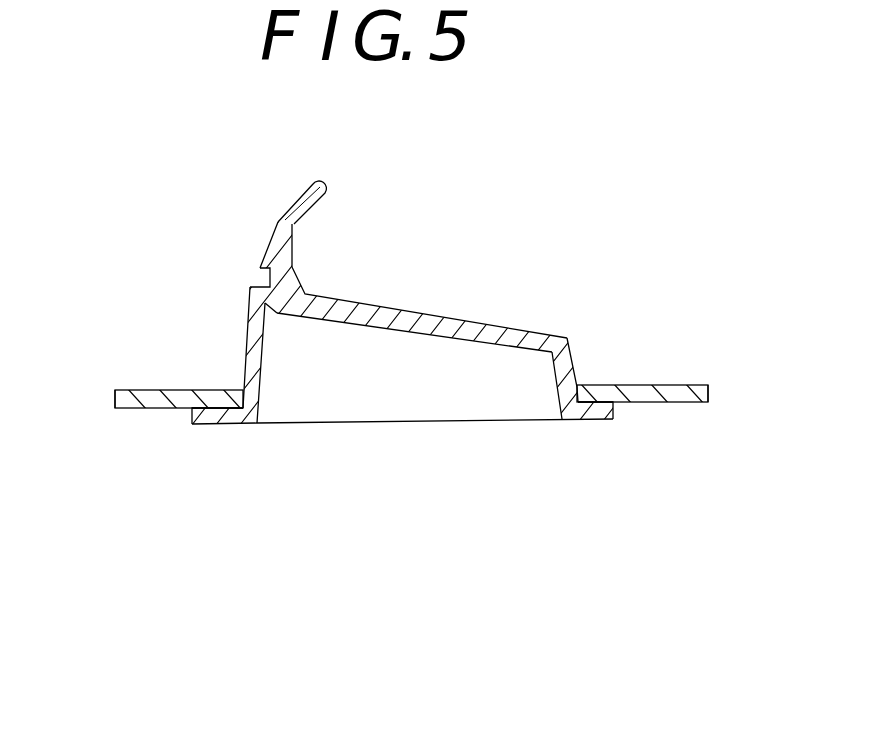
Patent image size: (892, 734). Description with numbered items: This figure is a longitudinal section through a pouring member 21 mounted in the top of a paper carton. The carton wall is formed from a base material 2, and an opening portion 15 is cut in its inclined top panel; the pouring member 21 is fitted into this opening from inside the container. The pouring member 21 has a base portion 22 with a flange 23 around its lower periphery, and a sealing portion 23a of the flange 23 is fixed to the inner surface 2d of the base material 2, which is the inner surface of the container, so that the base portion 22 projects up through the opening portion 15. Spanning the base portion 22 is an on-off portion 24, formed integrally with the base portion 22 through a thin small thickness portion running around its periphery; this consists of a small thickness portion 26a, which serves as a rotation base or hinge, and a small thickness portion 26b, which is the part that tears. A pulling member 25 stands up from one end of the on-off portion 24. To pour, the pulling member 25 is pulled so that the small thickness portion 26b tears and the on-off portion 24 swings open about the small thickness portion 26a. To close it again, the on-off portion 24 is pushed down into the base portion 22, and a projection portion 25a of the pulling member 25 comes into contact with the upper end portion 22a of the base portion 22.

The base material 2 is at (128, 382).
The inner surface of the base material 2d is at (140, 410).
The opening portion 15 is at (444, 432).
The pouring member 21 is at (395, 324).
The base portion 22 is at (243, 332).
The upper end portion of the base portion 22a is at (258, 282).
The flange 23 is at (245, 418).
The sealing portion 23a is at (203, 425).
The on-off portion 24 is at (432, 318).
The pulling member 25 is at (297, 203).
The projection portion 25a is at (261, 263).
The small thickness portion functioning as rotation base 26a is at (563, 337).
The small thickness portion to be torn 26b is at (267, 305).